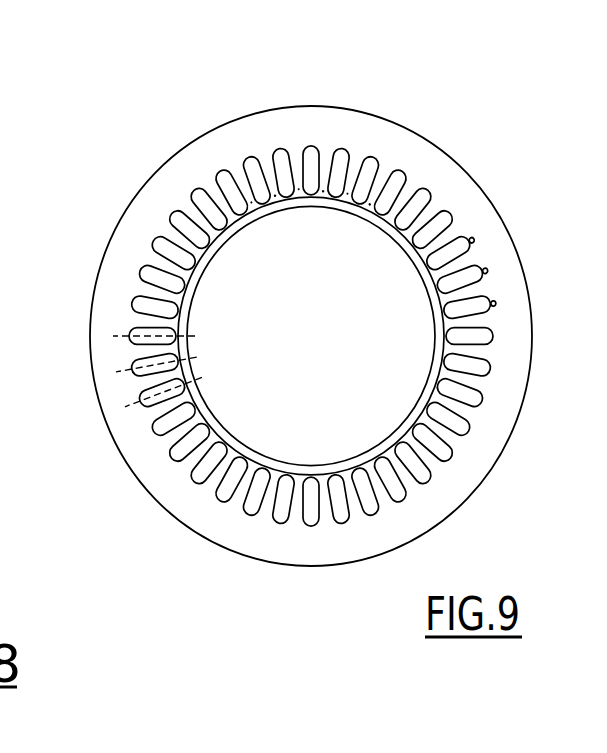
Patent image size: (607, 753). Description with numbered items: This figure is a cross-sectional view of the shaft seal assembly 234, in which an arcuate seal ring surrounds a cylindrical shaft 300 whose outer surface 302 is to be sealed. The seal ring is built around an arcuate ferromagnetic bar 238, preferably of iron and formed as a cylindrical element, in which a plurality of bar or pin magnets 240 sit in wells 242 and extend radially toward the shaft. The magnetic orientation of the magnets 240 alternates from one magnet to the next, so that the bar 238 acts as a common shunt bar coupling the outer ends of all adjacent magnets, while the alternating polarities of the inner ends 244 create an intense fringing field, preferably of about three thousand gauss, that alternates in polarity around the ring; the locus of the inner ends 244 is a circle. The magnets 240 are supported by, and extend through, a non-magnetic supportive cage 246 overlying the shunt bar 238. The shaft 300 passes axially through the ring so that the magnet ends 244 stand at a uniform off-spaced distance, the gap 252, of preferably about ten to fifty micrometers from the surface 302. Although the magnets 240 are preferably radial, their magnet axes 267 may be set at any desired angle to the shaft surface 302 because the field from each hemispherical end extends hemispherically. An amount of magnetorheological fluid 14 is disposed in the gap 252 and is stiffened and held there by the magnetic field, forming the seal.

The magnetorheological fluid 14 is at (357, 158).
The shaft seal assembly 234 is at (497, 115).
The arcuate ferromagnetic bar 238 is at (214, 527).
The bar or pin magnets 240 is at (453, 422).
The wells 242 is at (469, 241).
The inner ends 244 is at (400, 440).
The non-magnetic supportive cage 246 is at (437, 464).
The gap 252 is at (188, 390).
The magnet axes 267 is at (118, 336).
The cylindrical shaft 300 is at (347, 333).
The outer surface 302 is at (133, 283).